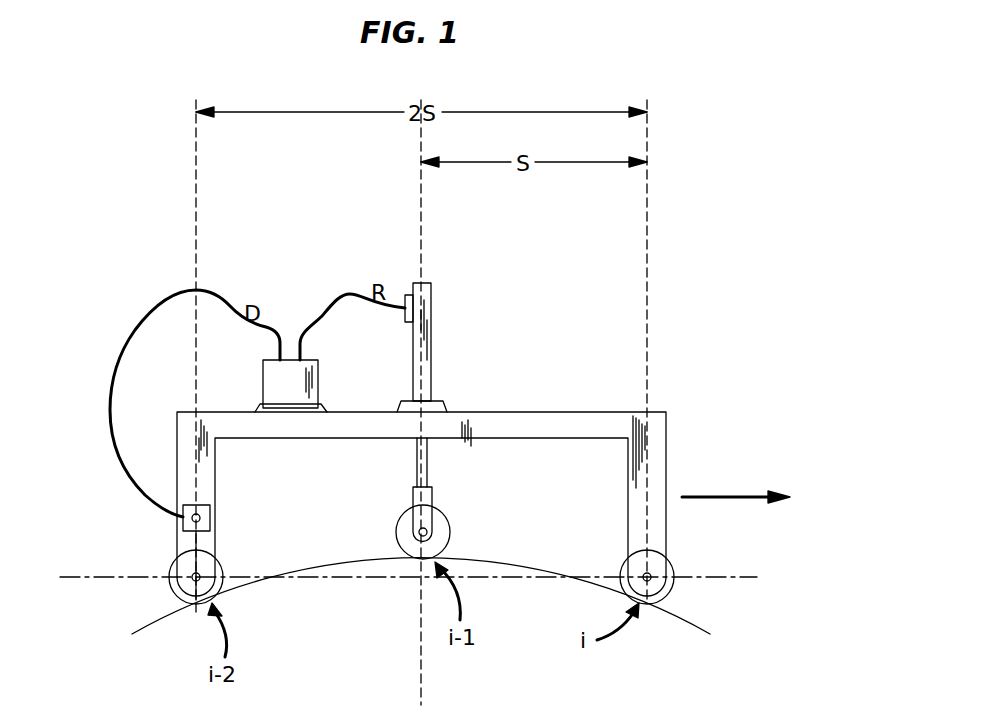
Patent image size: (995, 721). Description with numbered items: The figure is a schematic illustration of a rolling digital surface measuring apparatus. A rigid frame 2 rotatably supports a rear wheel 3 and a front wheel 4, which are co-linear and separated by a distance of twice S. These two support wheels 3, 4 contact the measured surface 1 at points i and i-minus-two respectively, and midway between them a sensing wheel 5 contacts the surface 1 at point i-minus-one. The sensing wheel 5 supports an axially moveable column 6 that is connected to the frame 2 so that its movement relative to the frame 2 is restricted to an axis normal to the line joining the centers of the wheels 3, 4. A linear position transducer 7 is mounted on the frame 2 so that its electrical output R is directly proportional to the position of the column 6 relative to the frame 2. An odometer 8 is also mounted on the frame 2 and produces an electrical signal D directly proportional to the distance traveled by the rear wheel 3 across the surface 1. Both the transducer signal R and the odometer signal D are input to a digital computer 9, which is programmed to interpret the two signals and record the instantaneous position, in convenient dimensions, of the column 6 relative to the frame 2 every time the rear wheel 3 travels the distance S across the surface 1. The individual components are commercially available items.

The measured surface 1 is at (690, 622).
The rigid frame 2 is at (614, 412).
The rear wheel 3 is at (224, 565).
The front wheel 4 is at (672, 560).
The sensing wheel 5 is at (450, 525).
The axially moveable column 6 is at (417, 468).
The linear position transducer 7 is at (431, 310).
The odometer 8 is at (210, 515).
The digital computer 9 is at (293, 396).